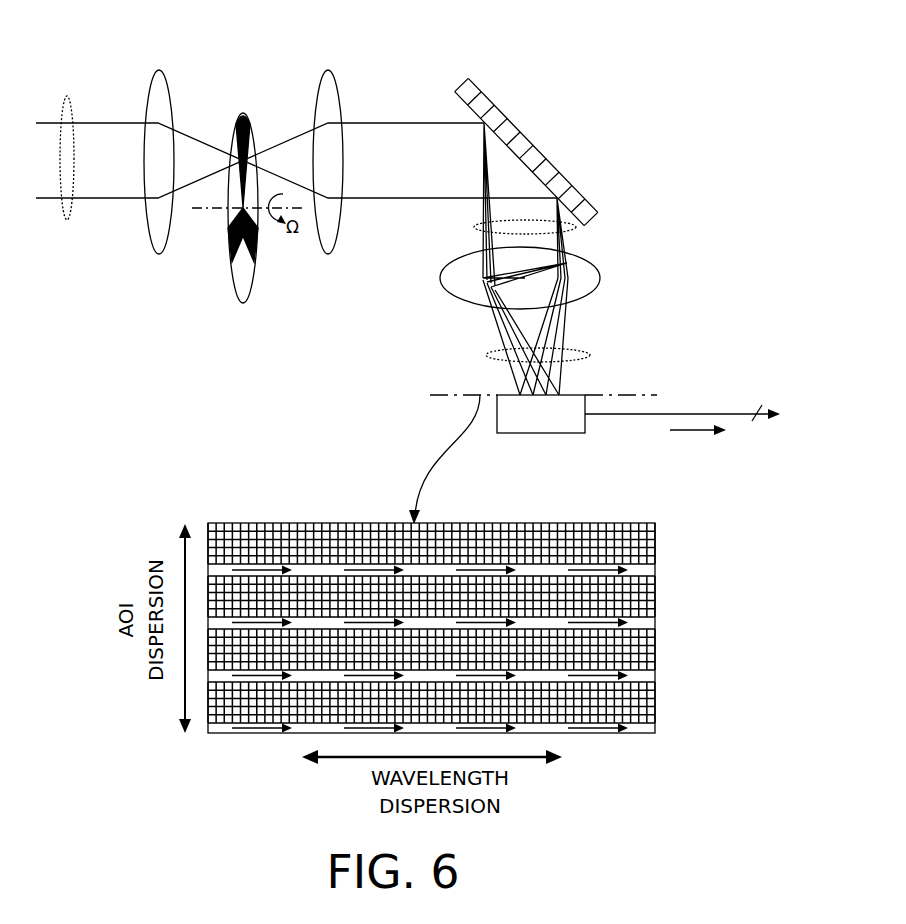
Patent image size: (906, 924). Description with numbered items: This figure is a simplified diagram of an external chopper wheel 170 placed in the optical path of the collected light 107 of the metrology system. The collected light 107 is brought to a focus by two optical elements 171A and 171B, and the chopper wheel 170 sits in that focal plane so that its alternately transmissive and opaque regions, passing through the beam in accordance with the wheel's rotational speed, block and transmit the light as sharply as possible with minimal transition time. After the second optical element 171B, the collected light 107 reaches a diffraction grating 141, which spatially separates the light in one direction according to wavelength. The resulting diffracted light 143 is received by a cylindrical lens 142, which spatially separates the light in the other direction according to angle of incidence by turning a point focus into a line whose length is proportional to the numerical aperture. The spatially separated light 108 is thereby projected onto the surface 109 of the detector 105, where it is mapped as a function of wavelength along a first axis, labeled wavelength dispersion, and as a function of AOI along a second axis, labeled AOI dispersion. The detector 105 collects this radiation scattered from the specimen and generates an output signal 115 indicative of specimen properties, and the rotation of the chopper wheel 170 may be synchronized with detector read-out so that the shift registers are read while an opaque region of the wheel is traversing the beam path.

The collected light 107 is at (72, 100).
The optical element 171A is at (160, 72).
The optical element 171B is at (329, 72).
The external chopper wheel 170 is at (238, 298).
The diffraction grating 141 is at (479, 90).
The diffracted light 143 is at (478, 227).
The cylindrical lens 142 is at (440, 283).
The spatially separated light 108 is at (592, 355).
The detector 105 is at (541, 414).
The output signal 115 is at (693, 433).
The detector surface 109 is at (280, 522).